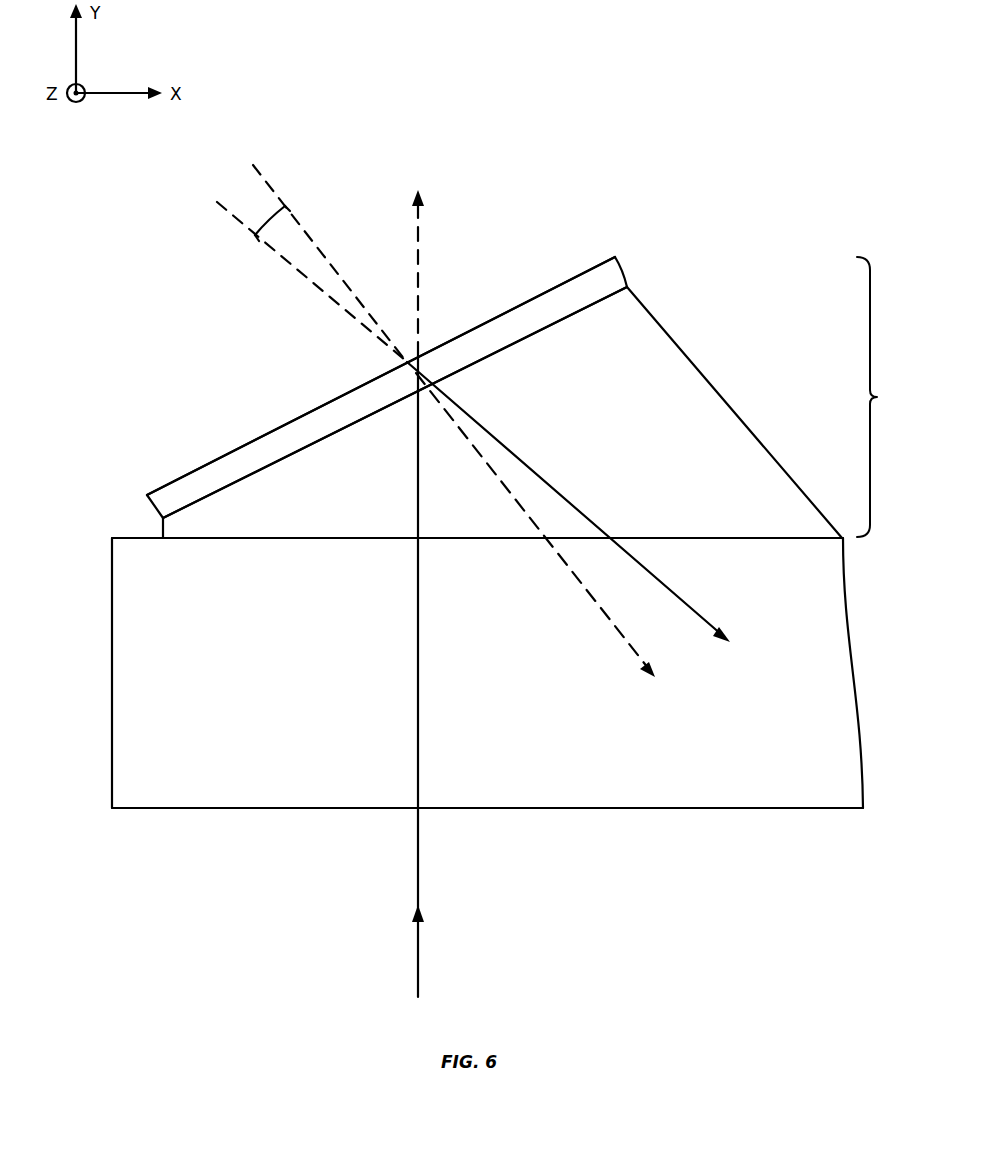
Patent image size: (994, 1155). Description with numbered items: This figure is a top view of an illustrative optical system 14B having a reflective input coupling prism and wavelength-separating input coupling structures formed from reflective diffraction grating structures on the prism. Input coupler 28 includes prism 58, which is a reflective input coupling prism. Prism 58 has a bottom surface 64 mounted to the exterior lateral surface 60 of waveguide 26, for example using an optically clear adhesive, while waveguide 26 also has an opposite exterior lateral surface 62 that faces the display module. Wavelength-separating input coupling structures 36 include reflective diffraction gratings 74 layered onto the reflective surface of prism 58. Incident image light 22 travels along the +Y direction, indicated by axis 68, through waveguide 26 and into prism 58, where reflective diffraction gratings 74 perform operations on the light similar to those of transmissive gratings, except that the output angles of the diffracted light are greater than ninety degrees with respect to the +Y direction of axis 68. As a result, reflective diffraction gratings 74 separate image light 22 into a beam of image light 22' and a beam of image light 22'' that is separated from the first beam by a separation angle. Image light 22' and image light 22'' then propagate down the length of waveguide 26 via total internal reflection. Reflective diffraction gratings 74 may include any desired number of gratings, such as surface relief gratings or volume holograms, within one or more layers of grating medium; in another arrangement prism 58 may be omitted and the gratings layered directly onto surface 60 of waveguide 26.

The optical assembly 14B is at (790, 134).
The image light 22 is at (388, 677).
The beam of image light 22' is at (572, 502).
The beam of image light 22'' is at (535, 525).
The waveguide 26 is at (127, 765).
The input coupler 28 is at (878, 397).
The wavelength-separating input coupling structures 36 is at (633, 256).
The prism 58 is at (700, 385).
The exterior (lateral) surface of waveguide 60 is at (808, 550).
The exterior (lateral) surface of waveguide 62 is at (746, 800).
The bottom surface of prism 64 is at (692, 530).
The axis 68 is at (418, 247).
The reflective diffraction gratings 74 is at (192, 482).